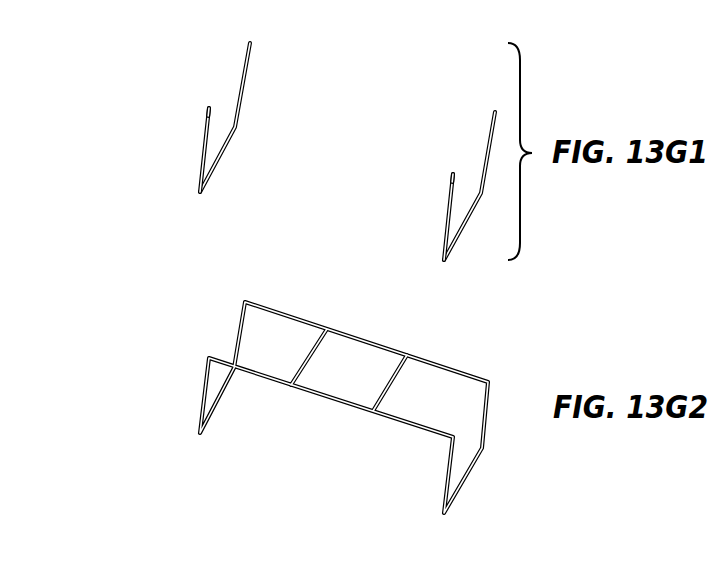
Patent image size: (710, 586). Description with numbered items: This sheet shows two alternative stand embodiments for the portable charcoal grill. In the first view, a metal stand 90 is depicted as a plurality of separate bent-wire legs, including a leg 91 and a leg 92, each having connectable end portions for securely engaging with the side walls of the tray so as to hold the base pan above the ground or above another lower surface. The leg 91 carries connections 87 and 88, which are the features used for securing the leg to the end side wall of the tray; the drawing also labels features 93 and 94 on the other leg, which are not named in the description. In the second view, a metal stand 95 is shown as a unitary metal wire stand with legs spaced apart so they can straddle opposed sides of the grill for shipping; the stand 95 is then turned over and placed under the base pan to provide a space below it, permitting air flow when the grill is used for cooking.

In FIG. 13G1, the metal stand 90 is at (149, 102).
In FIG. 13G1, the leg 92 is at (202, 165).
In FIG. 13G1, the bracket long arm 93 is at (250, 43).
In FIG. 13G1, the bracket leg tip 94 is at (209, 108).
In FIG. 13G1, the connection 87 is at (495, 112).
In FIG. 13G1, the connection 88 is at (453, 175).
In FIG. 13G1, the leg 91 is at (448, 233).
In FIG. 13G2, the metal stand 95 is at (186, 348).